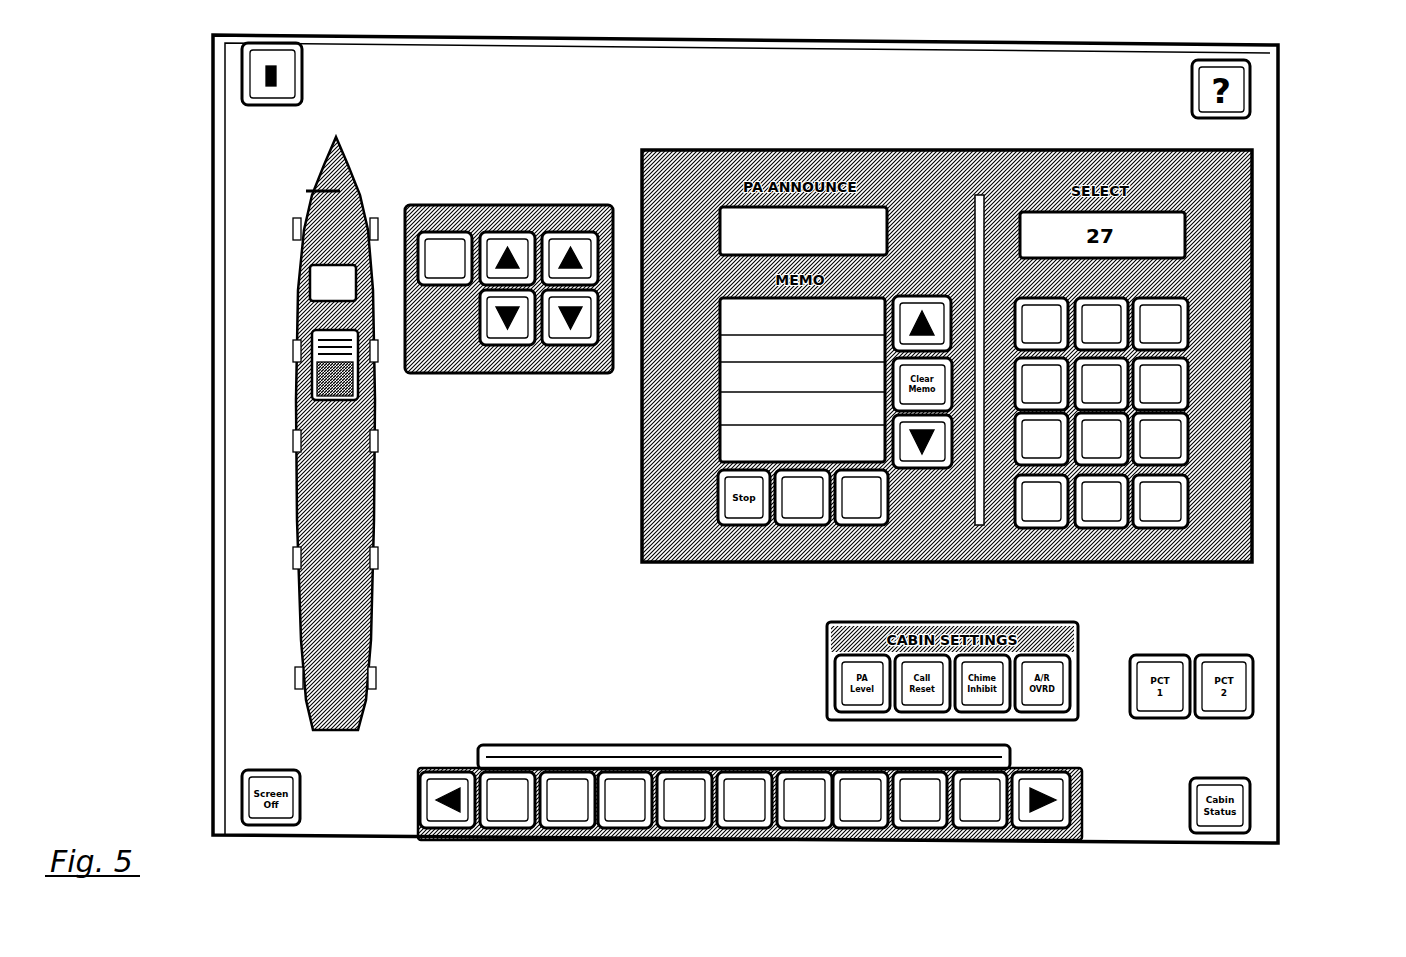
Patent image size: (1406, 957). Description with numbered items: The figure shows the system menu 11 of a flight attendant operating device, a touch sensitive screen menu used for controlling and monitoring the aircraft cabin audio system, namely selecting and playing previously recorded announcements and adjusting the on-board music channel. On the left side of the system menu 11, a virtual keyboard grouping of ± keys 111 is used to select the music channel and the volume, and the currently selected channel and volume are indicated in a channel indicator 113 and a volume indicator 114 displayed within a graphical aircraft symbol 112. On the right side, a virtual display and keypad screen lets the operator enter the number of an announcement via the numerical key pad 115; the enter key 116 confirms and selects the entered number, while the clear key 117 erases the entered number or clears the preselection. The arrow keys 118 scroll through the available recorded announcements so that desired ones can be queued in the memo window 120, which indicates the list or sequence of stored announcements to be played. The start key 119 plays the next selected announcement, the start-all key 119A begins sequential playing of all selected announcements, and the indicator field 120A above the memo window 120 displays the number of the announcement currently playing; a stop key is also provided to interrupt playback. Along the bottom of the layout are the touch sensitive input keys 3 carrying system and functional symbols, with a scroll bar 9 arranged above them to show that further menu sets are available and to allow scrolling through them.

The touch sensitive input keys 3 is at (682, 815).
The scroll bar 9 is at (750, 800).
The system menu 11 is at (1267, 222).
The ± keys 111 is at (470, 366).
The graphical aircraft symbol 112 is at (375, 493).
The channel indicator 113 is at (318, 283).
The volume indicator 114 is at (316, 352).
The numerical key pad 115 is at (1190, 412).
The enter key 116 is at (1175, 513).
The clear key 117 is at (1096, 547).
The arrow keys 118 is at (925, 338).
The start key 119 is at (795, 510).
The start-all key 119A is at (855, 515).
The memo window 120 is at (750, 418).
The indicator field 120A is at (868, 222).